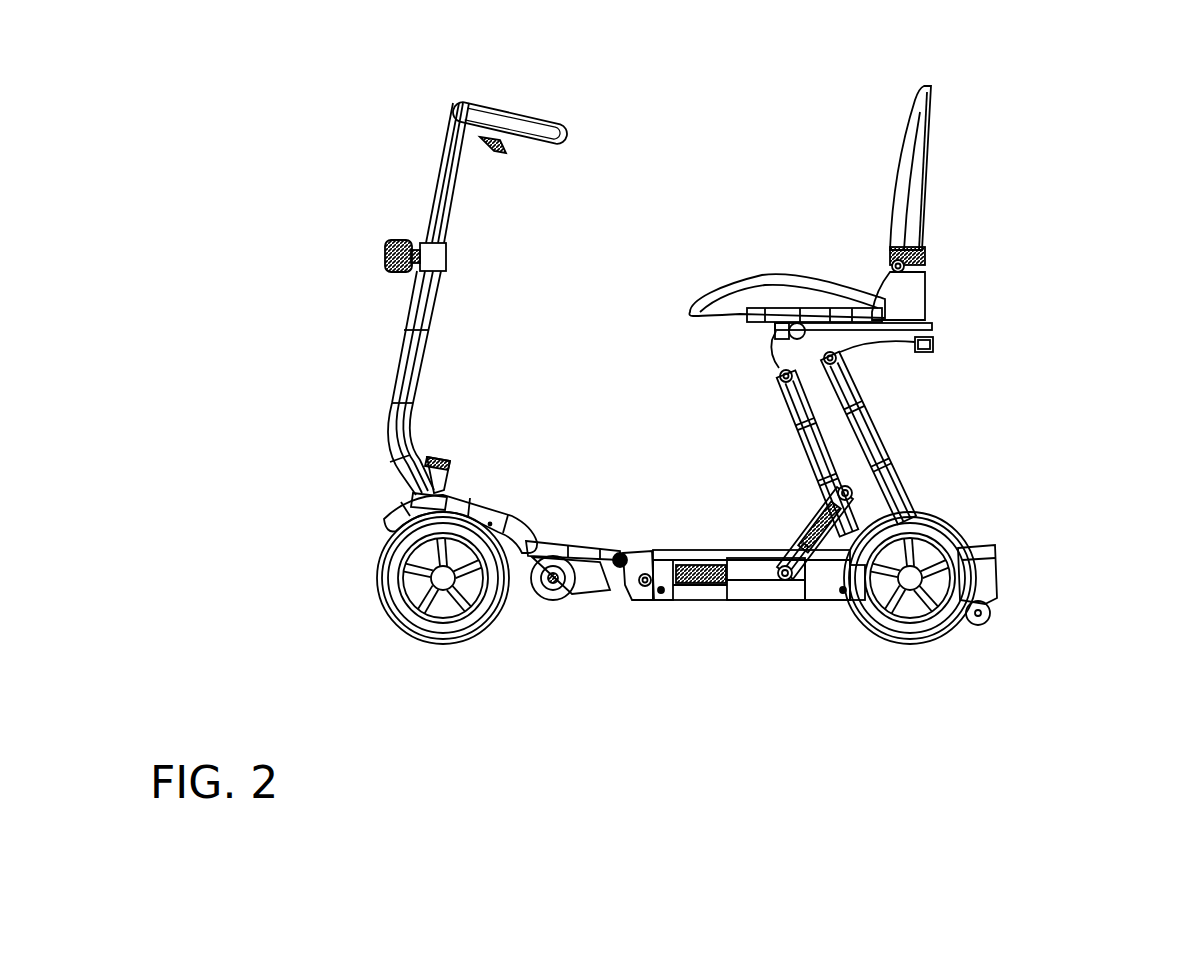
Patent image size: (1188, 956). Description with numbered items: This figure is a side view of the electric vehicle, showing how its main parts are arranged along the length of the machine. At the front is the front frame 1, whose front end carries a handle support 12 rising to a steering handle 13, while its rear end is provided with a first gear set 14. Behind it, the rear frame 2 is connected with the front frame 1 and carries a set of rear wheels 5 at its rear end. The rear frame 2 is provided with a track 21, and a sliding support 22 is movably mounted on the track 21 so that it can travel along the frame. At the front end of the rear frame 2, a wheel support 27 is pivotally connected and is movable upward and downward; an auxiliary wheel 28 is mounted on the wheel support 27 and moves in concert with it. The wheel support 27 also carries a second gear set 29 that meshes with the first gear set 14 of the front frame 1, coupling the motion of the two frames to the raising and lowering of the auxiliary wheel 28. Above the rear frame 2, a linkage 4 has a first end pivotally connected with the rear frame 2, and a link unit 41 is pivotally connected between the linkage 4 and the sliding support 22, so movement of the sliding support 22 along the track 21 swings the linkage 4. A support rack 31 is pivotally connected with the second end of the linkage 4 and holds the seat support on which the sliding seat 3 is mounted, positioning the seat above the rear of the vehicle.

The front frame 1 is at (400, 512).
The rear frame 2 is at (997, 557).
The sliding seat 3 is at (913, 297).
The linkage 4 is at (890, 460).
The rear wheels 5 is at (912, 612).
The handle support 12 is at (417, 355).
The steering handle 13 is at (517, 122).
The first gear set 14 is at (619, 553).
The track 21 is at (713, 588).
The sliding support 22 is at (775, 600).
The wheel support 27 is at (597, 578).
The auxiliary wheel 28 is at (548, 592).
The second gear set 29 is at (630, 590).
The support rack 31 is at (986, 322).
The link unit 41 is at (838, 598).